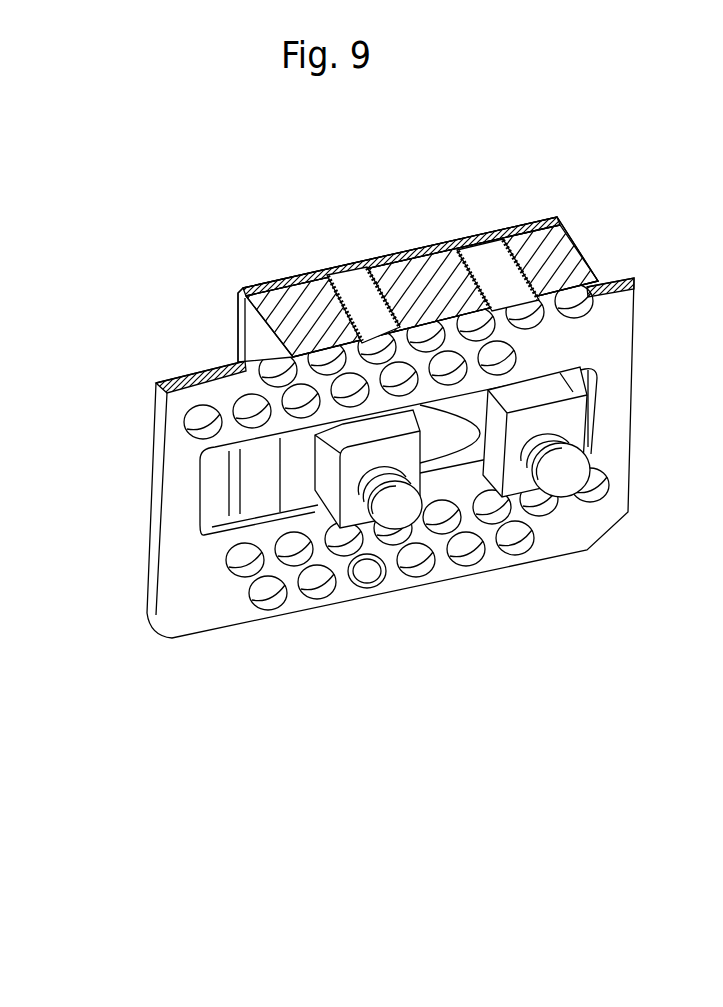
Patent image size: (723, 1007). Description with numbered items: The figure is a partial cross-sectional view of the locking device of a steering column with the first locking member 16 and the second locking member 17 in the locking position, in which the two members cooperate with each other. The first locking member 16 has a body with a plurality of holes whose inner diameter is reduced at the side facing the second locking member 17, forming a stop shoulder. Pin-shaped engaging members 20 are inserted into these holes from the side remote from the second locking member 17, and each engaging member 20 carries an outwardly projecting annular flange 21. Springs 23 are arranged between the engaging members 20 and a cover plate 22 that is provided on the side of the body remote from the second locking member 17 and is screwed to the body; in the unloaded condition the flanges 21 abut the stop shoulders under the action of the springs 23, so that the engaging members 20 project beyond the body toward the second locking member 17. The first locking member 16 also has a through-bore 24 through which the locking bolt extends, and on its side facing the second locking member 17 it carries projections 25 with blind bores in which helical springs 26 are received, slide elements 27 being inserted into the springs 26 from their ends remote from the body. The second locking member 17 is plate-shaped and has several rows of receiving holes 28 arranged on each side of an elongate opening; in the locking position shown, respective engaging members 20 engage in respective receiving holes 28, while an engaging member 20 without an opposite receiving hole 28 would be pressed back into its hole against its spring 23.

The first locking member 16 is at (579, 233).
The second locking member 17 is at (570, 533).
The engaging member 20 is at (520, 303).
The annular flange 21 is at (527, 257).
The cover plate 22 is at (294, 280).
The spring 23 is at (455, 250).
The through-bore 24 is at (435, 447).
The projection 25 is at (347, 488).
The spring 26 is at (378, 483).
The slide element 27 is at (390, 513).
The receiving hole 28 is at (513, 535).